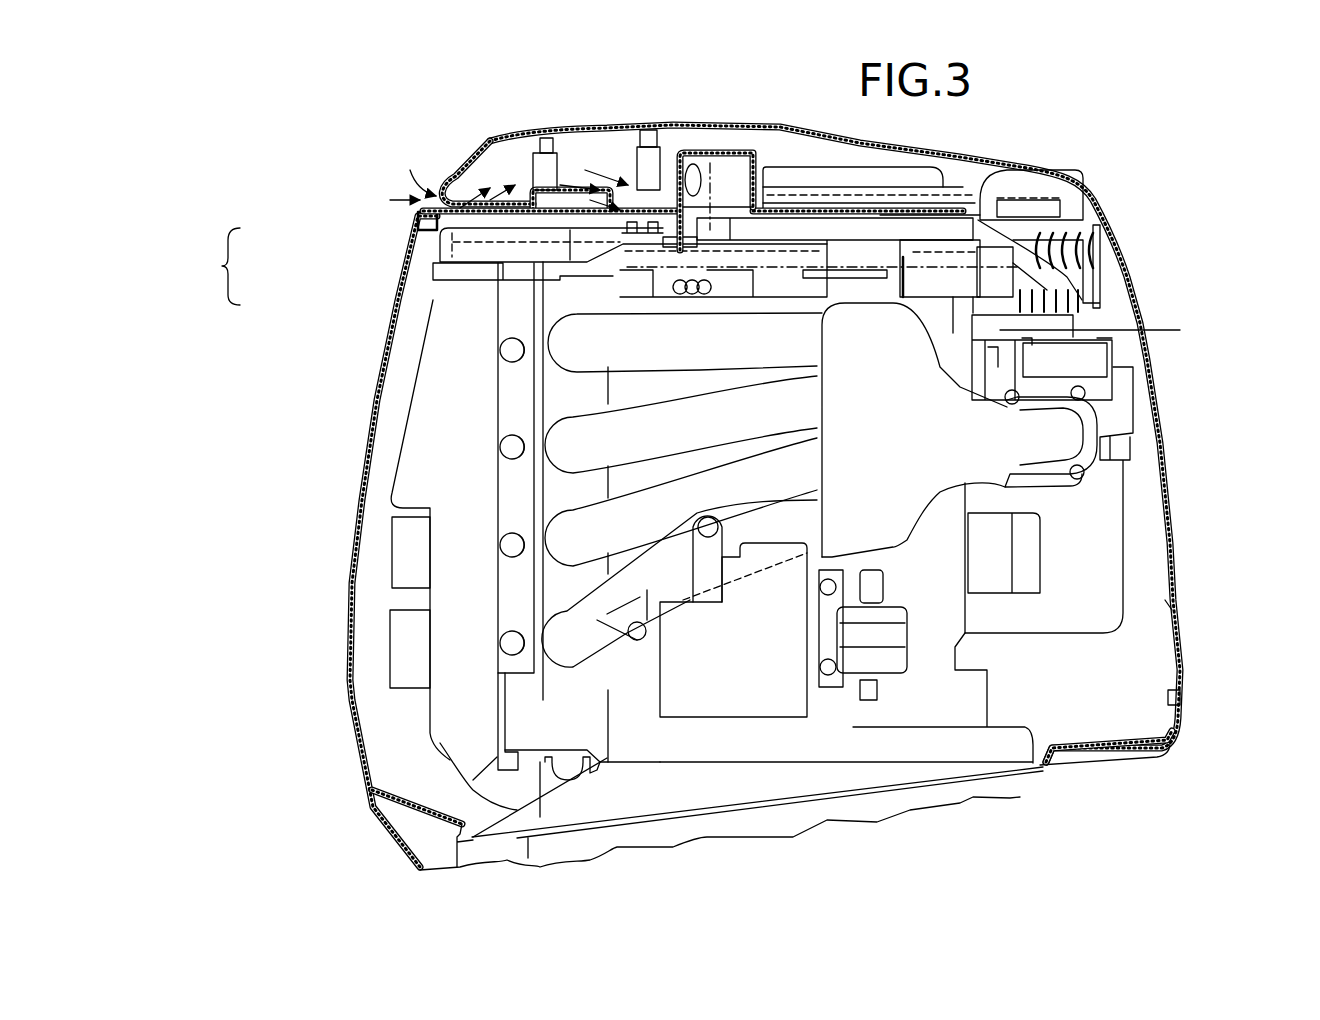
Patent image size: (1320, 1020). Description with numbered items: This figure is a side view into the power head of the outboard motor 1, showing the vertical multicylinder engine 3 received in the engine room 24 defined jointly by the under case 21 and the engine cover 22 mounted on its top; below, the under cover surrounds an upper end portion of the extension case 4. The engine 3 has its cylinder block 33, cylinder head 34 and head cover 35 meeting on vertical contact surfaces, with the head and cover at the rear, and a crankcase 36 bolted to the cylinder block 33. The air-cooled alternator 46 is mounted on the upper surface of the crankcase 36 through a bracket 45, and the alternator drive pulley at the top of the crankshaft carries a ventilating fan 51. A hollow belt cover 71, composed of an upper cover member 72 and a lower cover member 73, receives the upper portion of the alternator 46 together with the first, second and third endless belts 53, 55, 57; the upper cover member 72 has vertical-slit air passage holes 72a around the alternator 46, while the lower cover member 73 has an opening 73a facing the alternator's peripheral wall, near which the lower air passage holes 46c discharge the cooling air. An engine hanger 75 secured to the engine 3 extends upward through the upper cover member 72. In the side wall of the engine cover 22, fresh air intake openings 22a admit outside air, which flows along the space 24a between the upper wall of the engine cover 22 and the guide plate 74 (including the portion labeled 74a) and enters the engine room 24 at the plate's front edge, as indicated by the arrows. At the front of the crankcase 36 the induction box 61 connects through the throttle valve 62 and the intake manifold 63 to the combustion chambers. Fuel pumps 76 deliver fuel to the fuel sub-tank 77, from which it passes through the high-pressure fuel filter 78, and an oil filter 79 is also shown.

The outboard motor 1 is at (252, 182).
The vertical multicylinder engine 3 is at (400, 412).
The extension case 4 is at (1136, 483).
The under case 21 is at (1178, 722).
The engine cover 22 is at (1180, 637).
The fresh air intake openings 22a is at (436, 193).
The engine room 24 is at (1140, 645).
The space 24a is at (490, 172).
The cylinder block 33 is at (653, 735).
The cylinder head 34 is at (562, 707).
The head cover 35 is at (465, 733).
The crankcase 36 is at (960, 727).
The bracket 45 is at (960, 277).
The alternator 46 is at (1045, 262).
The lower air passage holes 46c is at (1100, 303).
The ventilating fan 51 is at (913, 180).
The first endless belt 53 is at (800, 257).
The second endless belt 55 is at (853, 232).
The third endless belt 57 is at (985, 195).
The induction box 61 is at (1123, 562).
The throttle valve 62 is at (1050, 393).
The intake manifold 63 is at (927, 520).
The belt cover 71 is at (214, 266).
The upper cover member 72 is at (445, 237).
The air passage holes 72a is at (1100, 273).
The lower cover member 73 is at (455, 275).
The opening 73a is at (913, 277).
The guide plate 74 is at (477, 210).
The mounting bracket 74a is at (727, 177).
The engine hanger 75 is at (673, 200).
The fuel pumps 76 is at (390, 630).
The fuel sub-tank 77 is at (770, 683).
The high-pressure fuel filter 78 is at (958, 700).
The oil filter 79 is at (1040, 565).